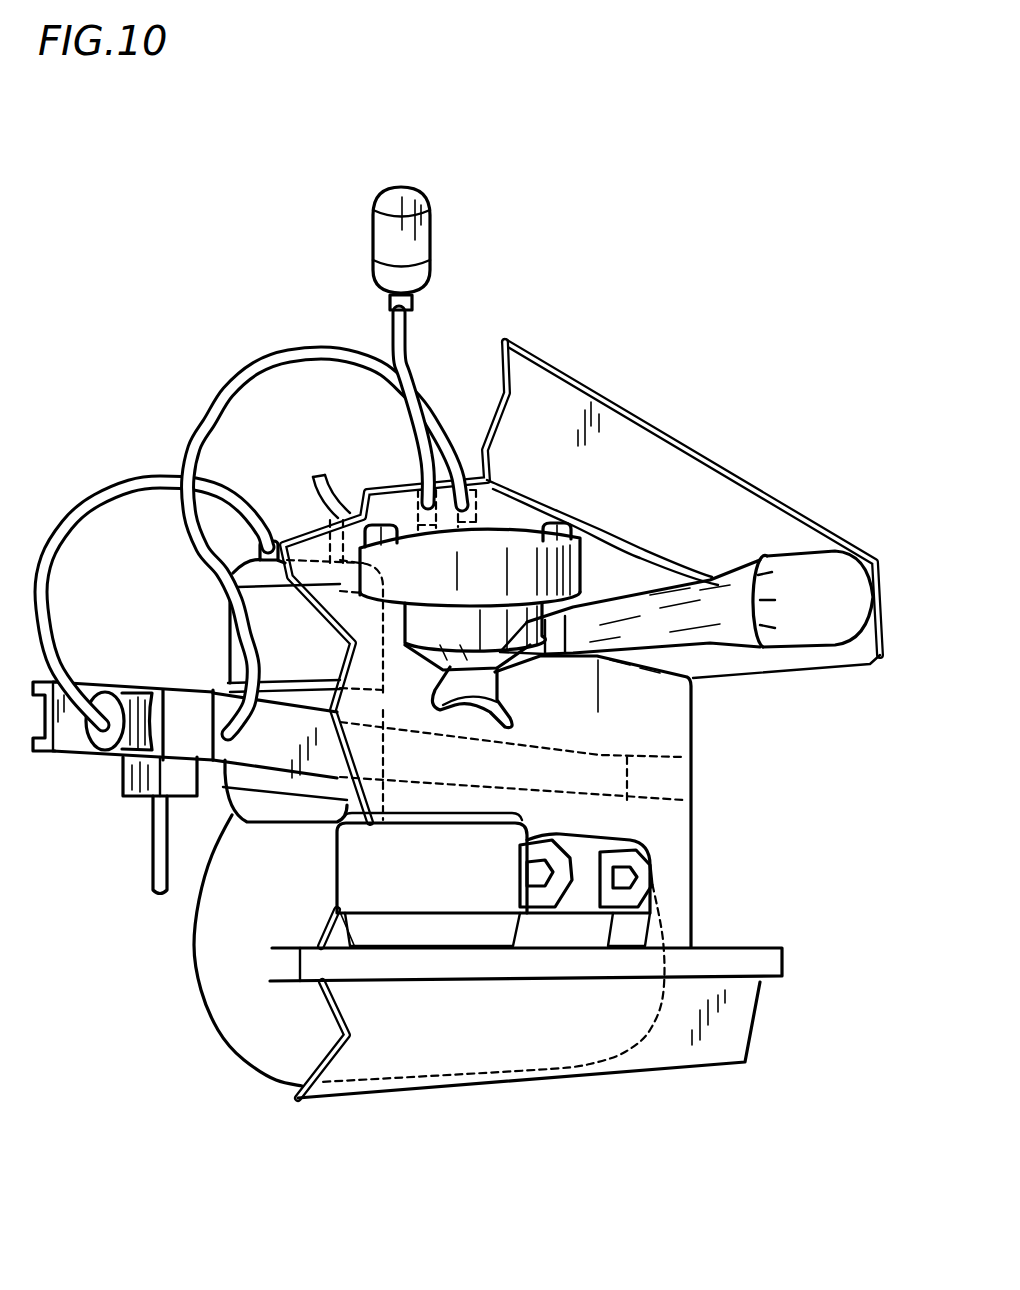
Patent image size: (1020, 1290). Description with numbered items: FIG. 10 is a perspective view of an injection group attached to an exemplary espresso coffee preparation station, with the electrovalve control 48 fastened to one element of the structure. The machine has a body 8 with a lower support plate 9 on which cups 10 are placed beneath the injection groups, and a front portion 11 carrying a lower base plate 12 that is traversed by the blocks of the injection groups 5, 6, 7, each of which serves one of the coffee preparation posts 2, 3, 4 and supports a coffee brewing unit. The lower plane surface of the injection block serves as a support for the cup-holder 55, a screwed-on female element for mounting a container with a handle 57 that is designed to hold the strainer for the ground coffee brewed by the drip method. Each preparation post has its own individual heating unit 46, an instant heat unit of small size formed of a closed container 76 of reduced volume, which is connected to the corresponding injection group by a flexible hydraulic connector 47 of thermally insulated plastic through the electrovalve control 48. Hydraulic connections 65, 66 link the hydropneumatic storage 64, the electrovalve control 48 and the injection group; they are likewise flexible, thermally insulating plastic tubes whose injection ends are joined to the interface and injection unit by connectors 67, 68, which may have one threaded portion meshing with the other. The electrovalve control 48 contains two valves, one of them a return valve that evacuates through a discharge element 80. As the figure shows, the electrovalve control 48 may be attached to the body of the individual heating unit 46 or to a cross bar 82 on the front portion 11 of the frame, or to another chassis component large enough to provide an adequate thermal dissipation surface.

The coffee preparation post 2 is at (599, 749).
The coffee preparation post 3 is at (599, 749).
The coffee preparation post 4 is at (599, 749).
The injection group 5 is at (599, 749).
The injection group 6 is at (599, 749).
The injection group 7 is at (518, 672).
The body 8 is at (730, 1062).
The lower support plate 9 is at (766, 963).
The cups 10 is at (550, 927).
The front portion 11 is at (675, 508).
The lower base plate 12 is at (443, 472).
The individual heating unit 46 is at (272, 807).
The flexible hydraulic connector 47 is at (144, 434).
The electrovalve control 48 is at (115, 756).
The cup-holder 55 is at (522, 548).
The handle 57 is at (800, 632).
The hydropneumatic storage 64 is at (418, 232).
The hydraulic connection 65 is at (392, 318).
The hydraulic connection 66 is at (288, 345).
The connector 67 is at (446, 483).
The connector 68 is at (468, 505).
The closed container 76 is at (230, 640).
The discharge element 80 is at (158, 825).
The cross bar 82 is at (70, 745).